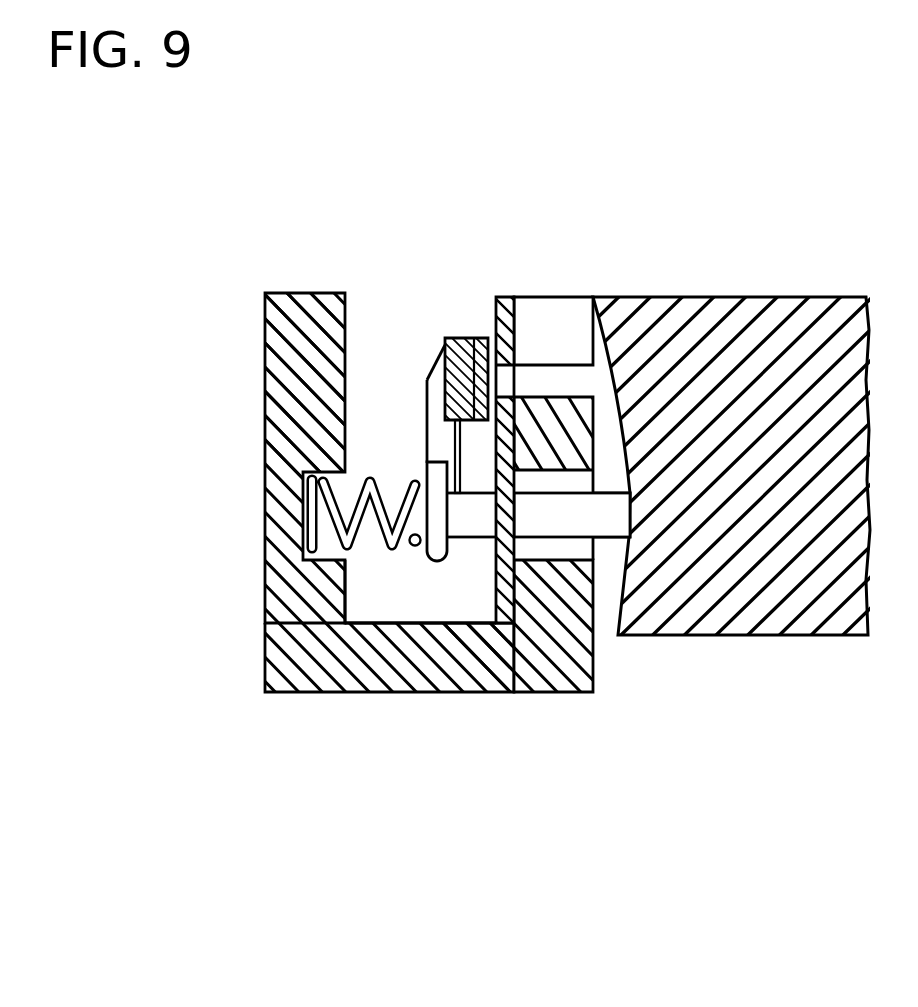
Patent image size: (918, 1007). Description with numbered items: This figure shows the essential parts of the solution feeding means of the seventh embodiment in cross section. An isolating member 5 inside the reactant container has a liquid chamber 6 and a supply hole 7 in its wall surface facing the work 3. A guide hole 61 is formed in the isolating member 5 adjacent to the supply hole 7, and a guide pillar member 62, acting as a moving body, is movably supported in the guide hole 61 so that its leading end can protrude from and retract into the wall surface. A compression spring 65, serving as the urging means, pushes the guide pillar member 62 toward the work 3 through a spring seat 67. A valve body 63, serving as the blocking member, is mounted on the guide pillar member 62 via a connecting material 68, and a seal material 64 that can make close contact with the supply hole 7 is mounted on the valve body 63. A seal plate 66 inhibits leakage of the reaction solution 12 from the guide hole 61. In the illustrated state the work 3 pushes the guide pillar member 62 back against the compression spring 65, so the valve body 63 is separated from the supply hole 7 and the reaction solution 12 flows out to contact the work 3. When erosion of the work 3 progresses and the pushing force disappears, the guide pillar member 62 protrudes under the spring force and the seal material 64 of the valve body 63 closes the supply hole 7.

The work 3 is at (730, 330).
The isolating member 5 is at (503, 663).
The liquid chamber 6 is at (373, 437).
The supply hole 7 is at (563, 377).
The reaction solution 12 is at (375, 590).
The guide hole 61 is at (562, 547).
The guide pillar member 62 is at (610, 517).
The valve body 63 is at (445, 345).
The seal material 64 is at (483, 340).
The compression spring 65 is at (340, 530).
The seal plate 66 is at (498, 335).
The spring seat 67 is at (437, 560).
The connecting material 68 is at (427, 380).